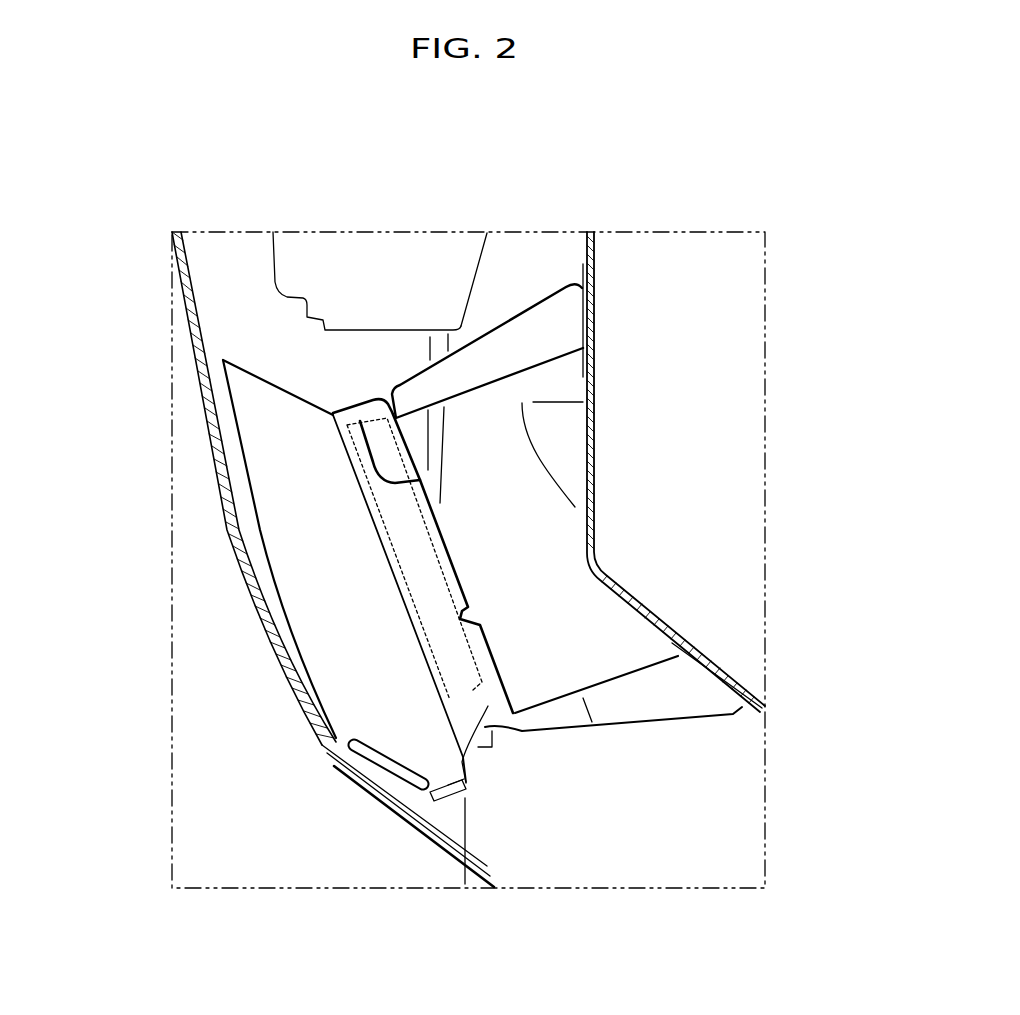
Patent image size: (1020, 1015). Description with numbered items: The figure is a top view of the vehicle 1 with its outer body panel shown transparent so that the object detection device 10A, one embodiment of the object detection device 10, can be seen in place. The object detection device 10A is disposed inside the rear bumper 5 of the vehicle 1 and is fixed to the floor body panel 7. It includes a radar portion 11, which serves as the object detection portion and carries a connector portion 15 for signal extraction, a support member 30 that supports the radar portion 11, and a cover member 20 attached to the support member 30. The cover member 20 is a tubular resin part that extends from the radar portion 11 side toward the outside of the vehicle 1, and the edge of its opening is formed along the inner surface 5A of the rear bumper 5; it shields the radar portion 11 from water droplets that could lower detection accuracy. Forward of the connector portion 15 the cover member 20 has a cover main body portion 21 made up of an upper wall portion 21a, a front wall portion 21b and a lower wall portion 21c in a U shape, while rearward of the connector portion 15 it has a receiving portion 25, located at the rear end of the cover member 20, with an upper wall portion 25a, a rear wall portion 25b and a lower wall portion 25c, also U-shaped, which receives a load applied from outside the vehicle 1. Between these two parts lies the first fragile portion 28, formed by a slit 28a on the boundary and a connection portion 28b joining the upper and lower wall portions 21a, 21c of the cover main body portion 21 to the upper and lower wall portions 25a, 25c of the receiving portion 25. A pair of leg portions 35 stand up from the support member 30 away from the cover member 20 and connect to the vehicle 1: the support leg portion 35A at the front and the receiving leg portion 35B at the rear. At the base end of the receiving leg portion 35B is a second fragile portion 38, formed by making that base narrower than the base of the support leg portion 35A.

The vehicle 1 is at (214, 219).
The object detection device 10 is at (367, 324).
The object detection device 10A is at (413, 364).
The leg portion 35 is at (437, 264).
The support leg portion 35A is at (473, 355).
The receiving leg portion 35B is at (647, 714).
The support member 30 is at (509, 309).
The floor body panel 7 is at (583, 393).
The cover member 20 is at (269, 507).
The cover main body portion 21 is at (269, 507).
The upper wall portion 21a is at (232, 405).
The front wall portion 21b is at (248, 372).
The lower wall portion 21c is at (258, 438).
The radar portion 11 is at (378, 478).
The first fragile portion 28 is at (250, 849).
The slit 28a is at (364, 755).
The connection portion 28b is at (345, 742).
The rear bumper 5 is at (295, 859).
The inner surface 5A is at (377, 775).
The receiving portion 25 is at (441, 888).
The upper wall portion 25a is at (393, 790).
The rear wall portion 25b is at (466, 827).
The lower wall portion 25c is at (417, 810).
The connector portion 15 is at (487, 737).
The second fragile portion 38 is at (524, 746).